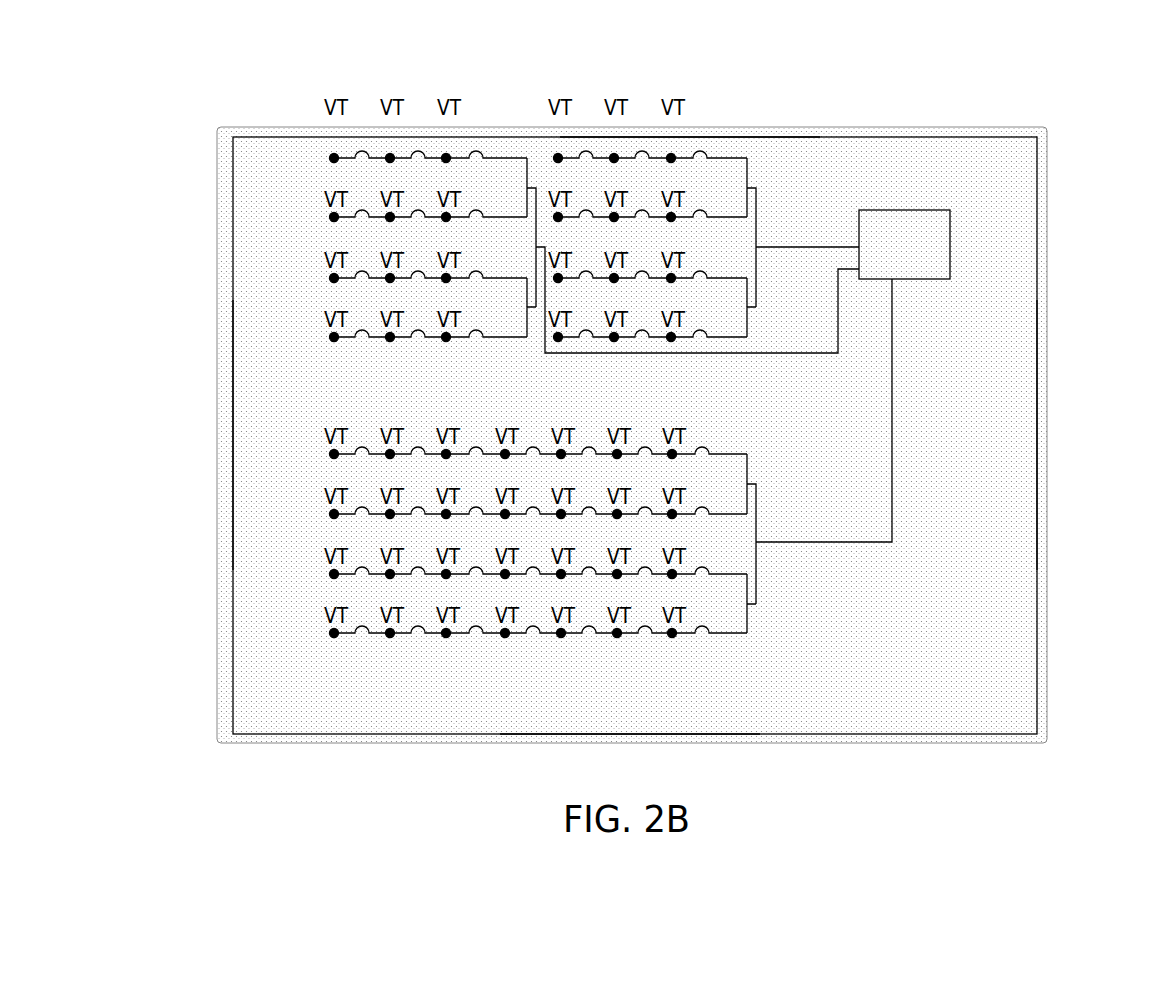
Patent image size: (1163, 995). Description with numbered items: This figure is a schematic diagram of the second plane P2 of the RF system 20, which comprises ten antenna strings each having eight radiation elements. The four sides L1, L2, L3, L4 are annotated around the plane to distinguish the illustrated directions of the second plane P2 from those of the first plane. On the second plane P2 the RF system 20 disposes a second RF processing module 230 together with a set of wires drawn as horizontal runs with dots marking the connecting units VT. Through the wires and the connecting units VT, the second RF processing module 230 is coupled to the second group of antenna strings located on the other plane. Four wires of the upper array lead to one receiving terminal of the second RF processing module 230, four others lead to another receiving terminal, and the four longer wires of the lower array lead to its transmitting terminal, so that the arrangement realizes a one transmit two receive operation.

The RF system 20 is at (1030, 112).
The second RF processing module 230 is at (887, 255).
The second plane P2 is at (943, 172).
The side L1 is at (1063, 435).
The side L2 is at (630, 759).
The side L3 is at (205, 435).
The side L4 is at (690, 99).
The connecting units VT is at (504, 136).